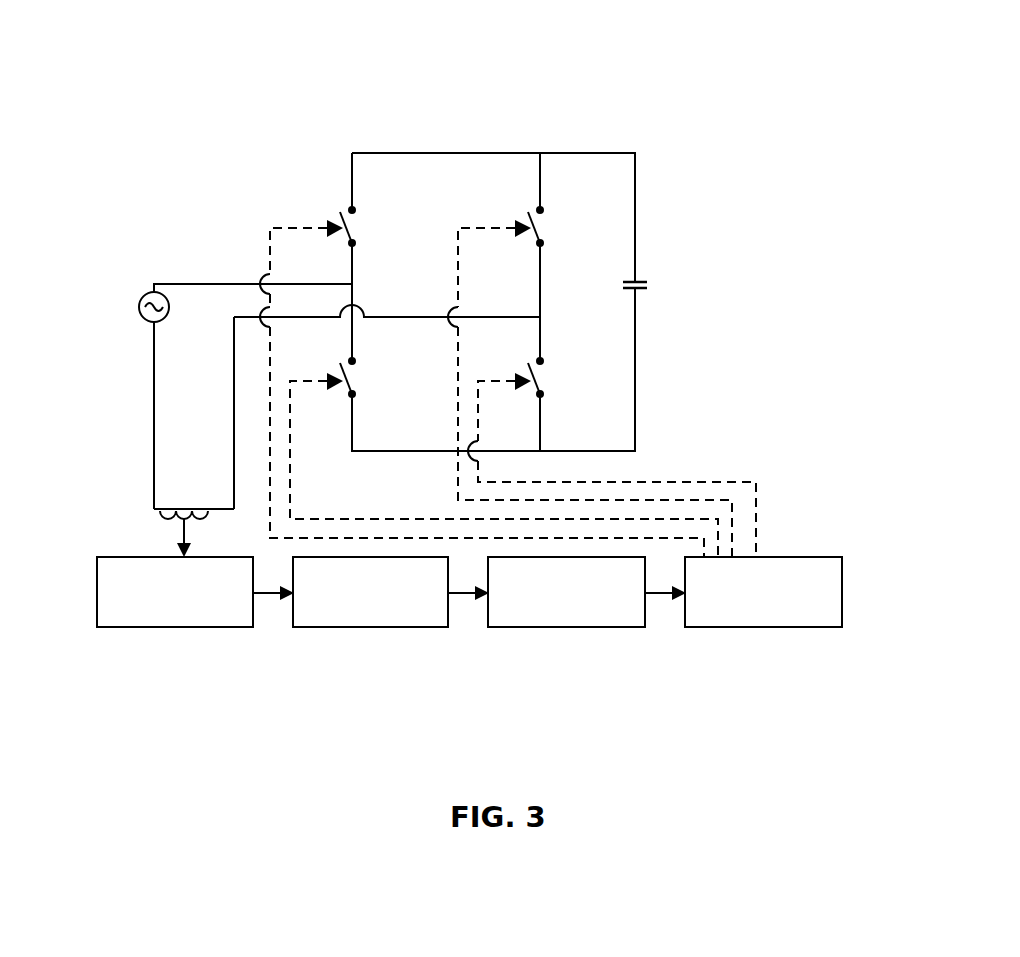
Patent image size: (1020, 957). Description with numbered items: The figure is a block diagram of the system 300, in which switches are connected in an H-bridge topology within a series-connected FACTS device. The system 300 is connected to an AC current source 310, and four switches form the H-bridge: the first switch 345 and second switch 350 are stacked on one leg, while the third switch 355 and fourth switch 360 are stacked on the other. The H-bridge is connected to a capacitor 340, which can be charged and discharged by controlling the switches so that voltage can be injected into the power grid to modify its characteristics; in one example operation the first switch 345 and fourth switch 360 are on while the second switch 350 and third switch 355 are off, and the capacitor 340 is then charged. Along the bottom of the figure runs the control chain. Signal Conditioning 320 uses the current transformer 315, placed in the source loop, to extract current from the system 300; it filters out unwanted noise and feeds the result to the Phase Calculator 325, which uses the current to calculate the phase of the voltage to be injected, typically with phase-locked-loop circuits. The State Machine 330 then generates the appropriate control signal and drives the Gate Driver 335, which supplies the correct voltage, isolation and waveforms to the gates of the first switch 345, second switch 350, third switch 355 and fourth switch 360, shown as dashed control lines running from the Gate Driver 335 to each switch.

The system 300 is at (509, 115).
The AC current source 310 is at (139, 299).
The current transformer 315 is at (160, 531).
The Signal Conditioning 320 is at (149, 630).
The Phase Calculator 325 is at (365, 630).
The State Machine 330 is at (560, 630).
The Gate Driver 335 is at (755, 630).
The capacitor 340 is at (655, 293).
The switch Q1 345 is at (360, 218).
The switch Q2 350 is at (360, 370).
The switch Q3 355 is at (545, 233).
The switch Q4 360 is at (545, 383).